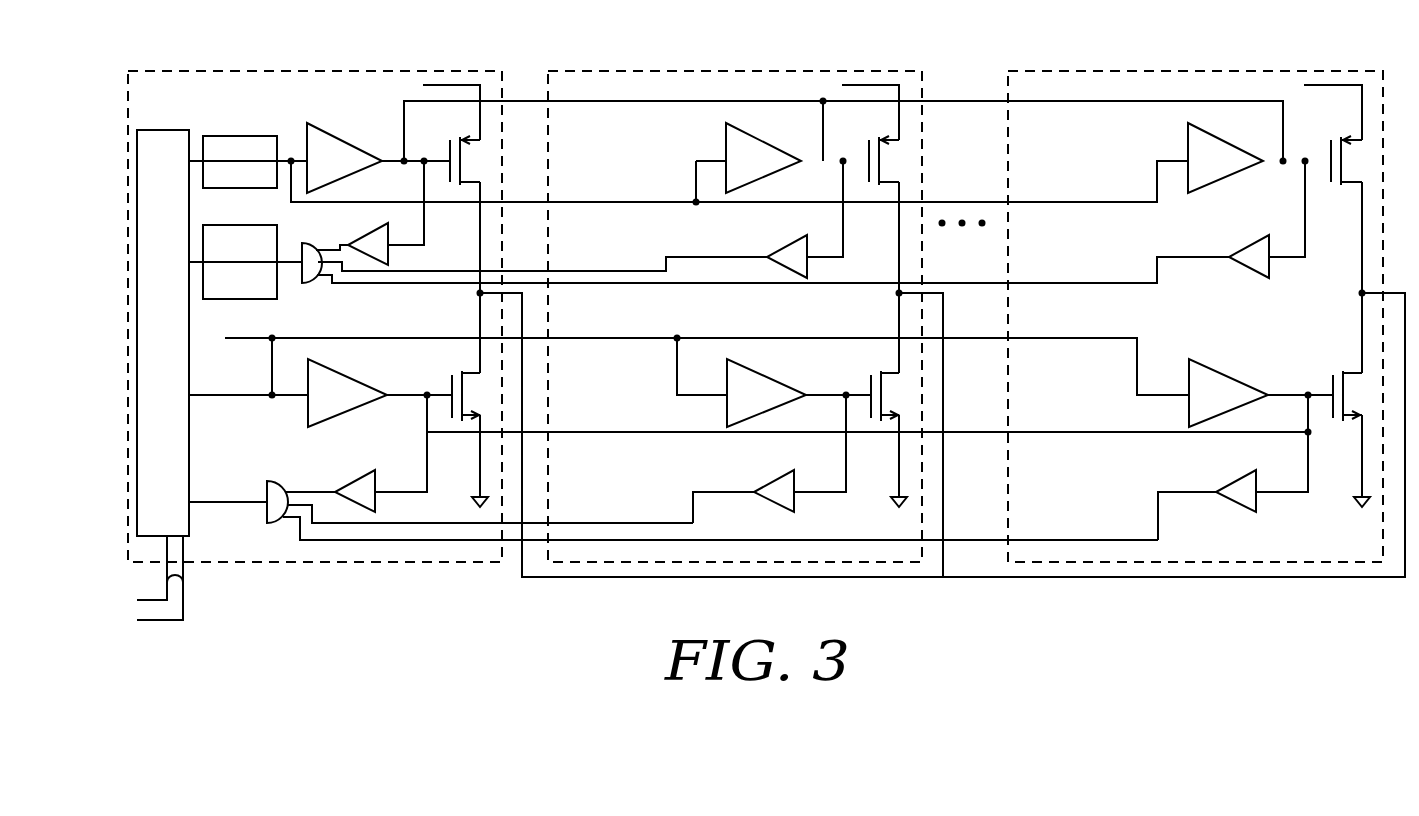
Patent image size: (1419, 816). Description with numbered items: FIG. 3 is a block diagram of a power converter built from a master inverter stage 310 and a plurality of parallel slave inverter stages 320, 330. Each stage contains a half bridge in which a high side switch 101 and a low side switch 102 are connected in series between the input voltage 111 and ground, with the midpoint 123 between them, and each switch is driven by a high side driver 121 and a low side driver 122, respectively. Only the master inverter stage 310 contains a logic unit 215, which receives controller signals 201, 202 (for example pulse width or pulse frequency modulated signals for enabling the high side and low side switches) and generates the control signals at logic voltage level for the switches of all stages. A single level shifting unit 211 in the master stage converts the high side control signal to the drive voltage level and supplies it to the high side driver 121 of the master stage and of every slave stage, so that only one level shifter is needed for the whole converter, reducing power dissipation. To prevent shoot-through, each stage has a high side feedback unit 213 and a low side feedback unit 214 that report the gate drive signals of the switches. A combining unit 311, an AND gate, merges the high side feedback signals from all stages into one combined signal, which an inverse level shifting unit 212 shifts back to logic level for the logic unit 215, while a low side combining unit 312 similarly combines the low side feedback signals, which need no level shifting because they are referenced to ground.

The high side switch 101 is at (449, 192).
The low side switch 102 is at (450, 428).
The input voltage 111 is at (441, 85).
The high side driver 121 is at (368, 150).
The low side driver 122 is at (361, 383).
The midpoint 123 is at (477, 296).
The controller signal 201 is at (185, 579).
The controller signal 202 is at (152, 622).
The level shifting unit 211 is at (258, 135).
The inverse level shifting unit 212 is at (237, 300).
The high side feedback unit 213 is at (358, 241).
The low side feedback unit 214 is at (346, 483).
The logic unit 215 is at (155, 130).
The master inverter stage 310 is at (199, 70).
The combining unit 311 is at (305, 246).
The low side combining unit 312 is at (270, 489).
The slave inverter stage 320 is at (619, 70).
The slave inverter stage 330 is at (1079, 70).